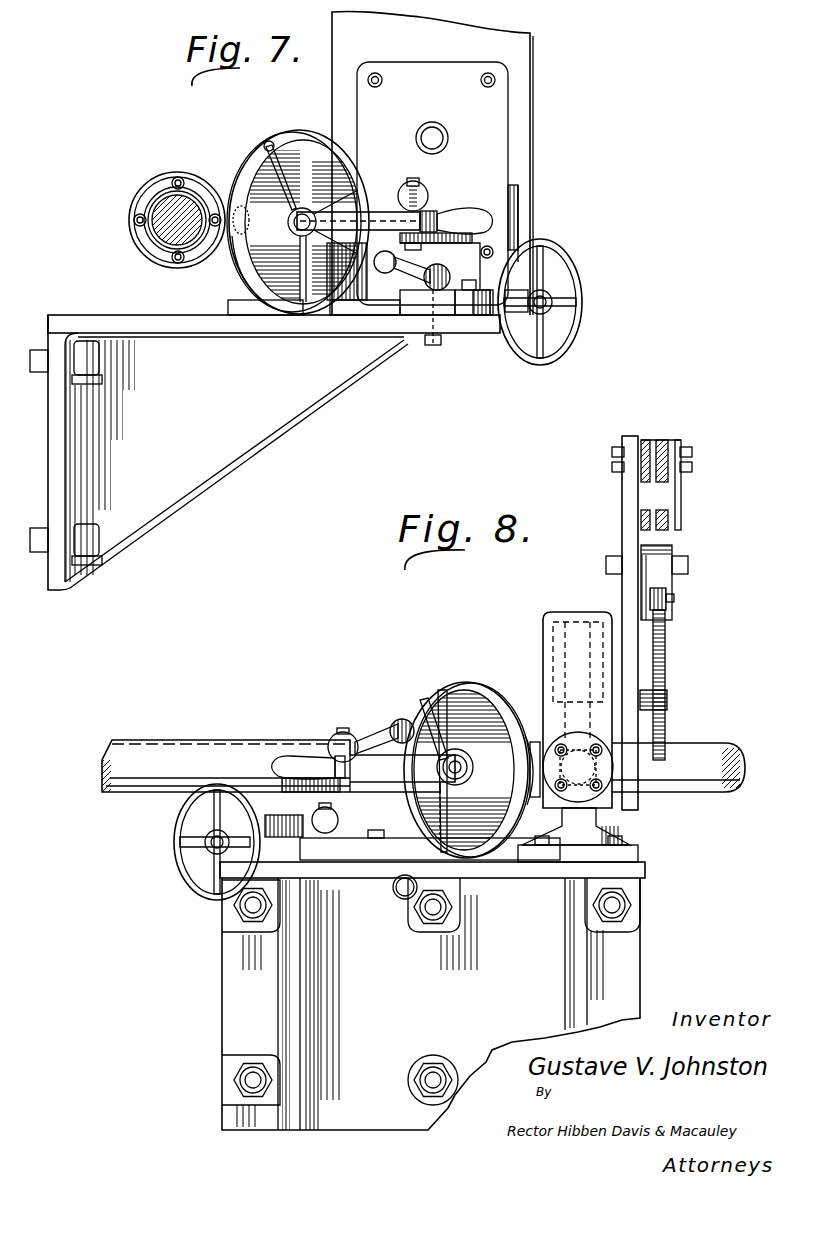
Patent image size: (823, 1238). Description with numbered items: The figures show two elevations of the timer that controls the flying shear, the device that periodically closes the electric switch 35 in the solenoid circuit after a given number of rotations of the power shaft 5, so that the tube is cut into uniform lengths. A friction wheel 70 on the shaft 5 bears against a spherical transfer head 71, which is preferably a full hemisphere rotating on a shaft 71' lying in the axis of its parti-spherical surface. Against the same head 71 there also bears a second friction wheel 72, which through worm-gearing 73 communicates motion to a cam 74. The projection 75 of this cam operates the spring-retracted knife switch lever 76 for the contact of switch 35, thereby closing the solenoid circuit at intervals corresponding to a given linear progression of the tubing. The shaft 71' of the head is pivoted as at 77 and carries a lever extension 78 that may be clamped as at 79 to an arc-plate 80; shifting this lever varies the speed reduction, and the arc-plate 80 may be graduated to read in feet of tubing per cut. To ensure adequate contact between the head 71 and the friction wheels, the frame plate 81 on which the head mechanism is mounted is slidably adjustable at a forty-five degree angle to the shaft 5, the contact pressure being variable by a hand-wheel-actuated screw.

In FIG. 7, the power shaft 5 is at (158, 234).
In FIG. 8, the power shaft 5 is at (187, 751).
In FIG. 8, the electric switch 35 is at (681, 492).
In FIG. 7, the friction wheel 70 is at (218, 170).
In FIG. 7, the spherical transfer head 71 is at (298, 218).
In FIG. 8, the spherical transfer head 71 is at (467, 751).
In FIG. 7, the shaft 71' is at (223, 269).
In FIG. 8, the friction wheel 72 is at (528, 745).
In FIG. 8, the worm-gearing 73 is at (577, 618).
In FIG. 8, the cam 74 is at (668, 726).
In FIG. 8, the projection 75 is at (664, 615).
In FIG. 8, the knife switch lever 76 is at (663, 553).
In FIG. 7, the pivot 77 is at (277, 185).
In FIG. 8, the pivot 77 is at (438, 740).
In FIG. 7, the lever extension 78 is at (343, 228).
In FIG. 8, the lever extension 78 is at (400, 722).
In FIG. 7, the clamp 79 is at (428, 198).
In FIG. 8, the clamp 79 is at (340, 733).
In FIG. 7, the arc-plate 80 is at (485, 232).
In FIG. 8, the arc-plate 80 is at (270, 782).
In FIG. 7, the frame plate 81 is at (402, 328).
In FIG. 8, the frame plate 81 is at (283, 800).